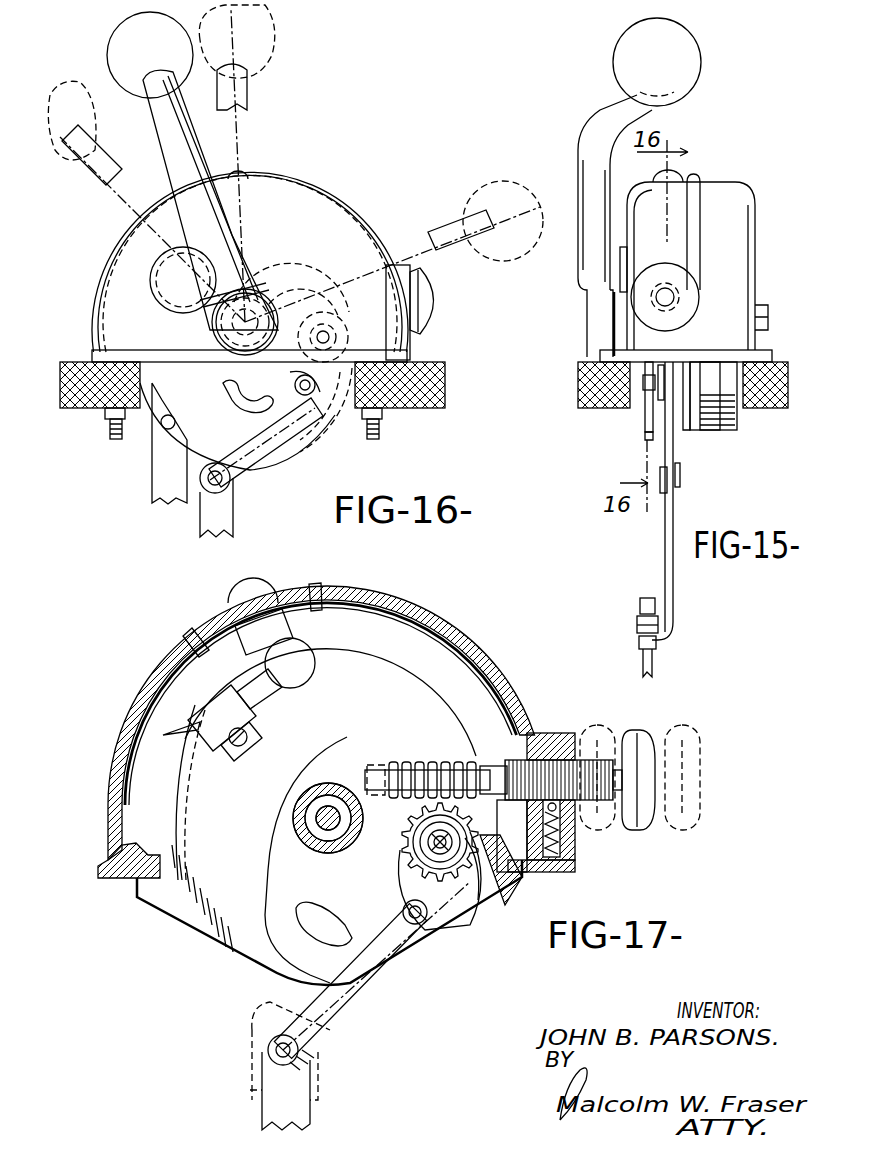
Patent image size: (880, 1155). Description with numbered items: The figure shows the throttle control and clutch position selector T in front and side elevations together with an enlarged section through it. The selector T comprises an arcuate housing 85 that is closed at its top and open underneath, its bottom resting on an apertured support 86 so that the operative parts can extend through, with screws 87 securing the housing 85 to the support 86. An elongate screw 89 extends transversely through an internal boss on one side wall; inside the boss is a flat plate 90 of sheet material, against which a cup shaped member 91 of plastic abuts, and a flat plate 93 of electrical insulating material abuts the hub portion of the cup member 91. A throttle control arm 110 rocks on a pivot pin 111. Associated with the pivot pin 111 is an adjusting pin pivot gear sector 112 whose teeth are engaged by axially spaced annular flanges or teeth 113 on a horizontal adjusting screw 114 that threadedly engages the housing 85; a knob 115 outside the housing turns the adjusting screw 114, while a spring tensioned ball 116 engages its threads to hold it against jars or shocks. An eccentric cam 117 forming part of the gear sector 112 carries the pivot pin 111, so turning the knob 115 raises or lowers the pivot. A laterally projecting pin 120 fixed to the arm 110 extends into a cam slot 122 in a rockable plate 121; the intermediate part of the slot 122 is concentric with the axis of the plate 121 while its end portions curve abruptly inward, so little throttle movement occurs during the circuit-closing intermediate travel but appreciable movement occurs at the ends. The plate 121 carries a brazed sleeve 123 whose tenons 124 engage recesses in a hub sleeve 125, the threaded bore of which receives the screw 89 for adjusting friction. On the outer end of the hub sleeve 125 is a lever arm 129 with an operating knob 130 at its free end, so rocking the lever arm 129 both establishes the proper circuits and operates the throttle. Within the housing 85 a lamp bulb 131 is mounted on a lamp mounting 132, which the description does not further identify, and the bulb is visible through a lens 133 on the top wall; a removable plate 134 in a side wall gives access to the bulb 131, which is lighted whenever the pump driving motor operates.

In FIG. 16, the arcuate housing 85 is at (282, 177).
In FIG. 15, the arcuate housing 85 is at (749, 216).
In FIG. 17, the arcuate housing 85 is at (437, 634).
In FIG. 16, the support 86 is at (422, 406).
In FIG. 15, the support 86 is at (773, 405).
In FIG. 16, the screws 87 is at (374, 431).
In FIG. 15, the elongate screw 89 is at (764, 313).
In FIG. 17, the elongate screw 89 is at (318, 819).
In FIG. 15, the flat plate 90 is at (728, 428).
In FIG. 15, the cup shaped member 91 is at (720, 432).
In FIG. 16, the flat plate 93 is at (163, 393).
In FIG. 15, the flat plate 93 is at (687, 370).
In FIG. 17, the flat plate 93 is at (468, 916).
In FIG. 16, the throttle control arm 110 is at (247, 477).
In FIG. 15, the throttle control arm 110 is at (673, 441).
In FIG. 17, the throttle control arm 110 is at (374, 1009).
In FIG. 16, the pivot pin 111 is at (338, 333).
In FIG. 17, the pivot pin 111 is at (447, 839).
In FIG. 17, the adjusting pin pivot gear sector 112 is at (409, 817).
In FIG. 17, the annular flanges or teeth 113 is at (440, 762).
In FIG. 17, the adjusting screw 114 is at (537, 757).
In FIG. 16, the knob 115 is at (426, 299).
In FIG. 15, the knob 115 is at (643, 302).
In FIG. 17, the knob 115 is at (650, 737).
In FIG. 17, the spring tensioned ball 116 is at (562, 822).
In FIG. 17, the eccentric cam 117 is at (465, 845).
In FIG. 16, the pin 120 is at (306, 398).
In FIG. 15, the pin 120 is at (660, 390).
In FIG. 17, the pin 120 is at (428, 921).
In FIG. 16, the rockable plate 121 is at (303, 430).
In FIG. 15, the rockable plate 121 is at (648, 436).
In FIG. 17, the rockable plate 121 is at (269, 874).
In FIG. 16, the cam slot 122 is at (253, 388).
In FIG. 17, the cam slot 122 is at (320, 938).
In FIG. 17, the sleeve 123 is at (310, 793).
In FIG. 17, the tenons 124 is at (320, 783).
In FIG. 17, the hub sleeve 125 is at (320, 812).
In FIG. 16, the lever arm 129 is at (162, 136).
In FIG. 15, the lever arm 129 is at (586, 144).
In FIG. 16, the operating knob 130 is at (113, 43).
In FIG. 15, the operating knob 130 is at (701, 66).
In FIG. 17, the lamp bulb 131 is at (315, 665).
In FIG. 17, the block 132 is at (218, 721).
In FIG. 16, the lens 133 is at (182, 179).
In FIG. 15, the lens 133 is at (660, 176).
In FIG. 17, the lens 133 is at (233, 606).
In FIG. 16, the removable plate 134 is at (153, 262).
In FIG. 16, the throttle control and clutch position selector T is at (346, 199).
In FIG. 15, the throttle control and clutch position selector T is at (728, 167).